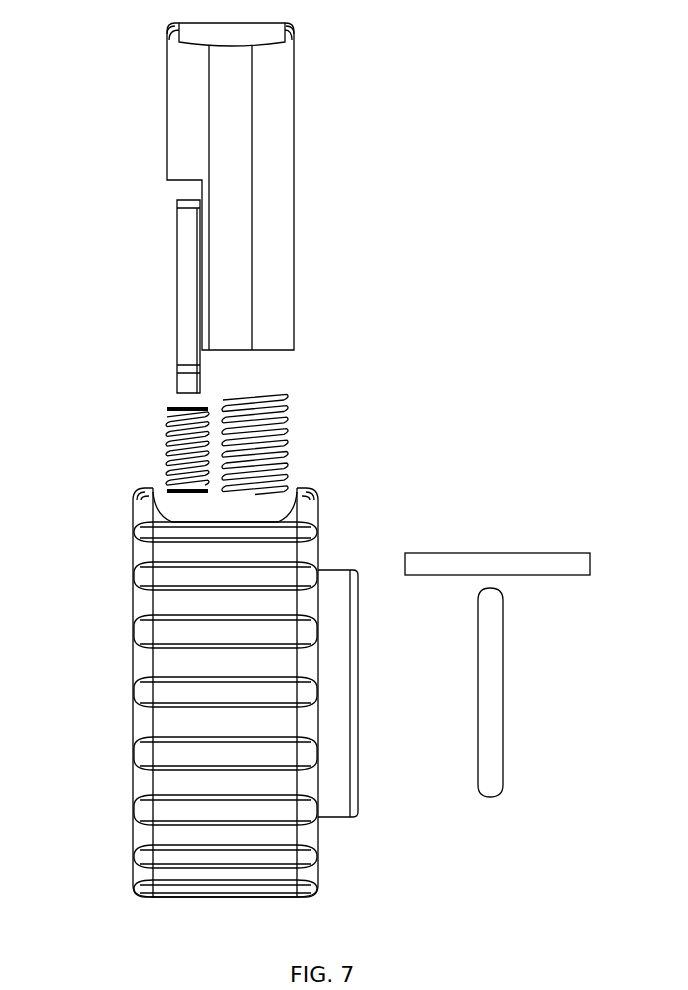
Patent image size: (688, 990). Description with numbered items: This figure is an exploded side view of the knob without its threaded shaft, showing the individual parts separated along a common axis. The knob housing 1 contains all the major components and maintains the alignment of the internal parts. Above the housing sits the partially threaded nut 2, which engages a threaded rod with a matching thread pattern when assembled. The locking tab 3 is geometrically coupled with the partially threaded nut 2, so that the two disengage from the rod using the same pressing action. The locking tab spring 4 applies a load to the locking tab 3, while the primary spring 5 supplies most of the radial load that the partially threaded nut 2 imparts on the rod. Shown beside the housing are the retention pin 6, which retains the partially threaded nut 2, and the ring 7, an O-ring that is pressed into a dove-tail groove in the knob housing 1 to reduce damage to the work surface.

The knob housing 1 is at (140, 660).
The partially threaded nut 2 is at (230, 107).
The locking tab 3 is at (189, 270).
The locking tab spring 4 is at (168, 406).
The primary spring 5 is at (273, 390).
The retention pin 6 is at (465, 562).
The ring 7 is at (490, 698).